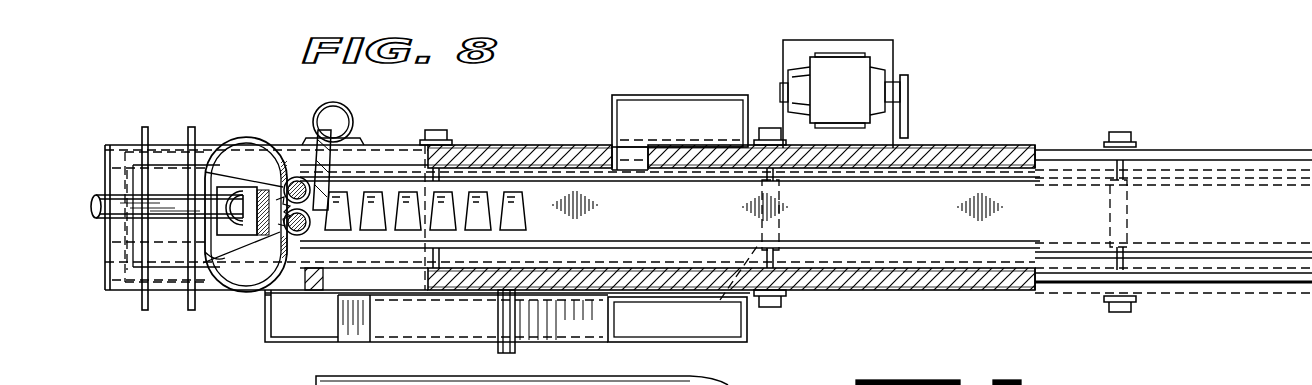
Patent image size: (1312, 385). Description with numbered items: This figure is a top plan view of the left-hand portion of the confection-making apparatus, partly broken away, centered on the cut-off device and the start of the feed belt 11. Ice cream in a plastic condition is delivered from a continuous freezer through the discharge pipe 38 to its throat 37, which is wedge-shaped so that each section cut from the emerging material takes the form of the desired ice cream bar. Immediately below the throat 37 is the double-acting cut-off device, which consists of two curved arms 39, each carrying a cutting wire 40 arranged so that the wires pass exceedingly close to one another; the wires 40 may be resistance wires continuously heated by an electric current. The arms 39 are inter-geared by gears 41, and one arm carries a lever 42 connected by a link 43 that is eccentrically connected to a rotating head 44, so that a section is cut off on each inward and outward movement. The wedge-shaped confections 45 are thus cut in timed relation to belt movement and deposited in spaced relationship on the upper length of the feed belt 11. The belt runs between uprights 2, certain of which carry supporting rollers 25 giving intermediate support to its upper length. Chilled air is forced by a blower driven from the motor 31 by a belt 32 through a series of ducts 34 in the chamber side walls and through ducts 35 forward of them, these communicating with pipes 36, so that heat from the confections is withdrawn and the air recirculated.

The uprights 2 is at (450, 143).
The feed belt 11 is at (708, 265).
The supporting rollers 25 is at (1128, 215).
The motor 31 is at (862, 80).
The belt 32 is at (906, 128).
The ducts 34 is at (630, 147).
The ducts 35 is at (301, 316).
The pipes 36 is at (680, 95).
The throat 37 is at (232, 188).
The discharge pipe 38 is at (158, 197).
The curved arms 39 is at (268, 138).
The cutting wire 40 is at (196, 168).
The gears 41 is at (298, 237).
The lever 42 is at (312, 203).
The link 43 is at (325, 167).
The rotating head 44 is at (341, 118).
The wedge-shaped confections 45 is at (508, 193).